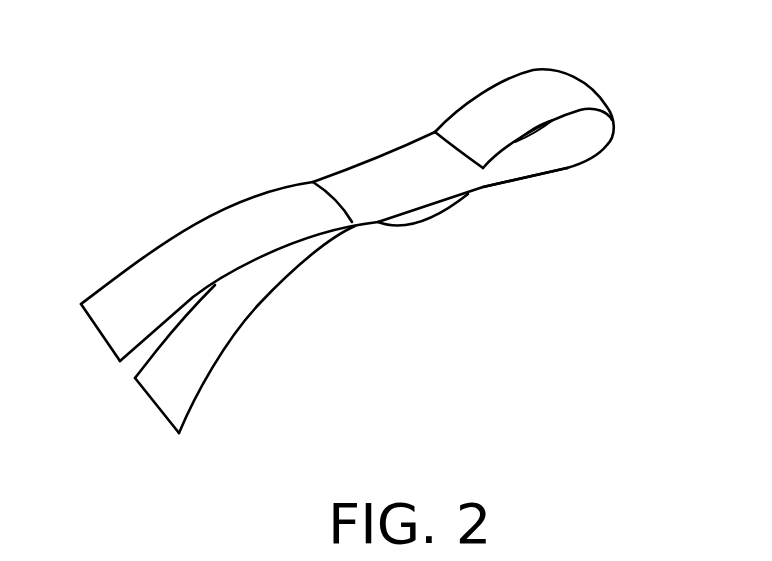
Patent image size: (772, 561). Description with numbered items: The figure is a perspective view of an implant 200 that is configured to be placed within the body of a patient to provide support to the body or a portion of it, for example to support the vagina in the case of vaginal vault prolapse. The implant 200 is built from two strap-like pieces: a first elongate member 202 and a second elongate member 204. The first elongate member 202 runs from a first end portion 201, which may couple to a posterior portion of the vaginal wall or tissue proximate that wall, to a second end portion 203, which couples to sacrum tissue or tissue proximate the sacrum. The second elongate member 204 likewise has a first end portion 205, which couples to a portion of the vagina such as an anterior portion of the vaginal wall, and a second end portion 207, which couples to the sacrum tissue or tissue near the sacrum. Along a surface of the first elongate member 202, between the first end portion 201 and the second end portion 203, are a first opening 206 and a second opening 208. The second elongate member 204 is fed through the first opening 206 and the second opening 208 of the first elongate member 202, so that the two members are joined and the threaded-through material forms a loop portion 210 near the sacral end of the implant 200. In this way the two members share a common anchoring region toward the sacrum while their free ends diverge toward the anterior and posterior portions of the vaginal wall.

The implant 200 is at (209, 104).
The first end portion 201 is at (190, 415).
The first elongate member 202 is at (223, 323).
The second end portion 203 is at (567, 170).
The second elongate member 204 is at (188, 243).
The first end portion 205 is at (115, 279).
The first opening 206 is at (352, 222).
The second end portion 207 is at (539, 69).
The second opening 208 is at (483, 170).
The loop portion 210 is at (593, 132).